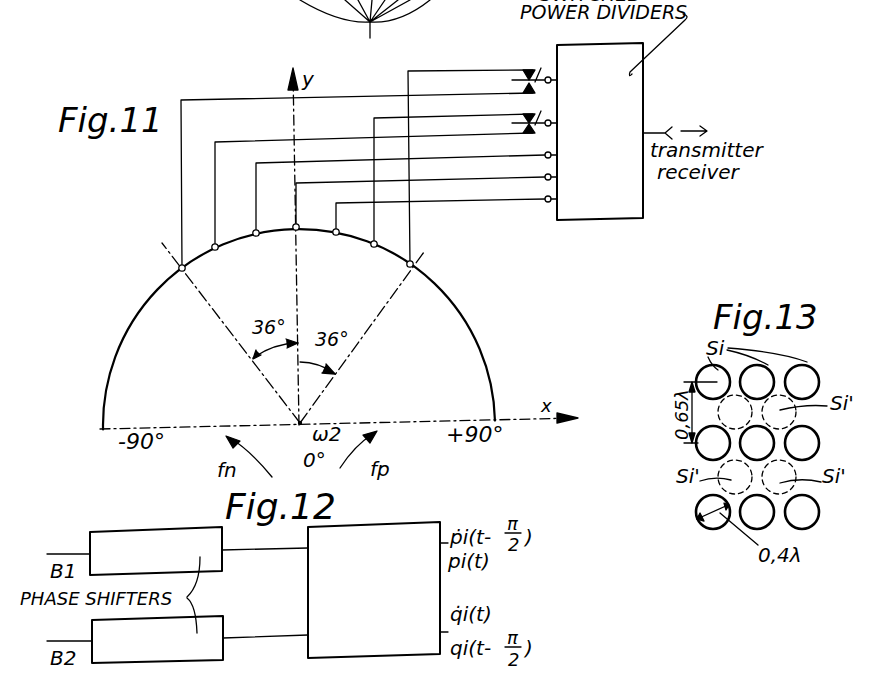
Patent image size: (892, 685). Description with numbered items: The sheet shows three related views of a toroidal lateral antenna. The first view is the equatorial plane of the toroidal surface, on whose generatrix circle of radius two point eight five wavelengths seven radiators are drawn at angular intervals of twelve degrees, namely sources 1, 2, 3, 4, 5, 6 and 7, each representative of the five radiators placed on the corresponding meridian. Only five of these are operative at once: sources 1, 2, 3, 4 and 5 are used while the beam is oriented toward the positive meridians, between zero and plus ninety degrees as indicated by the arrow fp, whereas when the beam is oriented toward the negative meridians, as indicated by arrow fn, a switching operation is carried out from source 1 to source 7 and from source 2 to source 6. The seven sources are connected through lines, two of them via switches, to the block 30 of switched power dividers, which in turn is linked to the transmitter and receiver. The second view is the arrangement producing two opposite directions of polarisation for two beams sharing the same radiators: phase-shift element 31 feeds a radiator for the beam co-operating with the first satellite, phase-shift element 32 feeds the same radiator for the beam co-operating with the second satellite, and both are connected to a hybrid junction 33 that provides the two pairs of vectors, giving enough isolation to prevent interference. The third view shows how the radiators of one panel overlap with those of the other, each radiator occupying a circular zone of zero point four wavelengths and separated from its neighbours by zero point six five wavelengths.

In FIG. 11, the source 1 is at (354, 192).
In FIG. 11, the source 2 is at (371, 201).
In FIG. 11, the source 3 is at (397, 211).
In FIG. 11, the source 4 is at (417, 219).
In FIG. 11, the source 5 is at (436, 230).
In FIG. 11, the source 6 is at (450, 193).
In FIG. 11, the source 7 is at (468, 181).
In FIG. 11, the switched power dividers 30 is at (623, 107).
In FIG. 12, the phase-shift element 31 is at (127, 545).
In FIG. 12, the phase-shift element 32 is at (143, 633).
In FIG. 12, the hybrid junction 33 is at (400, 545).